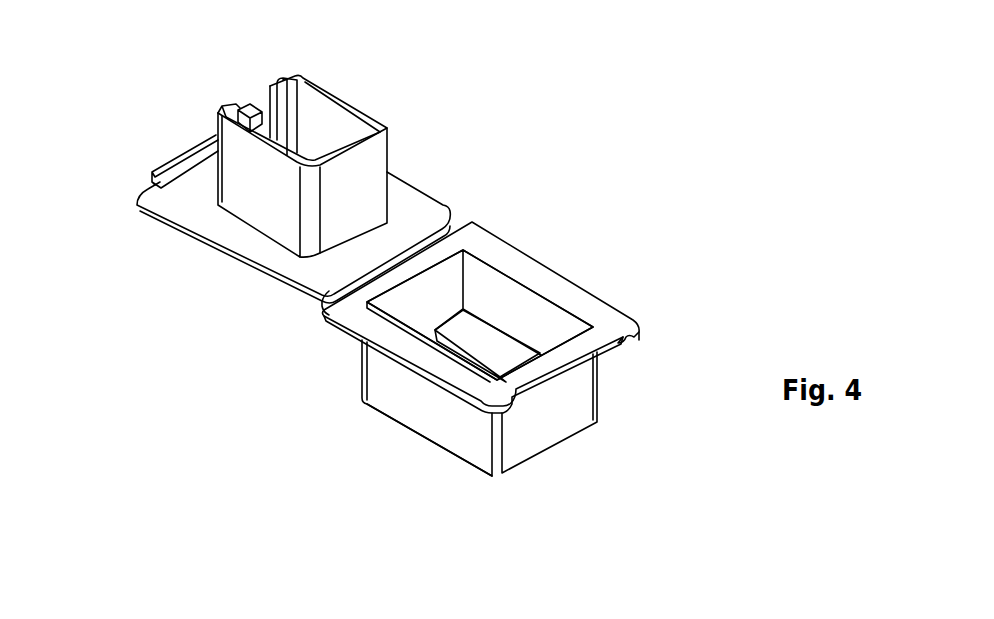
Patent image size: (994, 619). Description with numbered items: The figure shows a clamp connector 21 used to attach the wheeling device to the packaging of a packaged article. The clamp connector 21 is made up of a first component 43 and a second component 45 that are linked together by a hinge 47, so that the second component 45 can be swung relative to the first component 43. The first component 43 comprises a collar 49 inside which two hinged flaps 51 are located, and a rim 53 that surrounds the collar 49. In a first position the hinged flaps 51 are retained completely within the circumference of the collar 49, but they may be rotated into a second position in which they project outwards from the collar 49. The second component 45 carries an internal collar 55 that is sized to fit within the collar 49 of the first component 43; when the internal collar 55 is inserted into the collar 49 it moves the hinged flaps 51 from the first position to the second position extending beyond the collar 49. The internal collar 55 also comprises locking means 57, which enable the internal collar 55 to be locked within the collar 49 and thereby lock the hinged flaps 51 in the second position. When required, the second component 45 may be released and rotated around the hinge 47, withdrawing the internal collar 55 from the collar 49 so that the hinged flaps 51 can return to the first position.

The clamp connector 21 is at (509, 207).
The first component 43 is at (613, 270).
The second component 45 is at (212, 270).
The hinge 47 is at (358, 278).
The collar 49 is at (448, 418).
The hinged flaps 51 is at (513, 352).
The rim 53 is at (424, 352).
The internal collar 55 is at (258, 198).
The locking means 57 is at (247, 108).